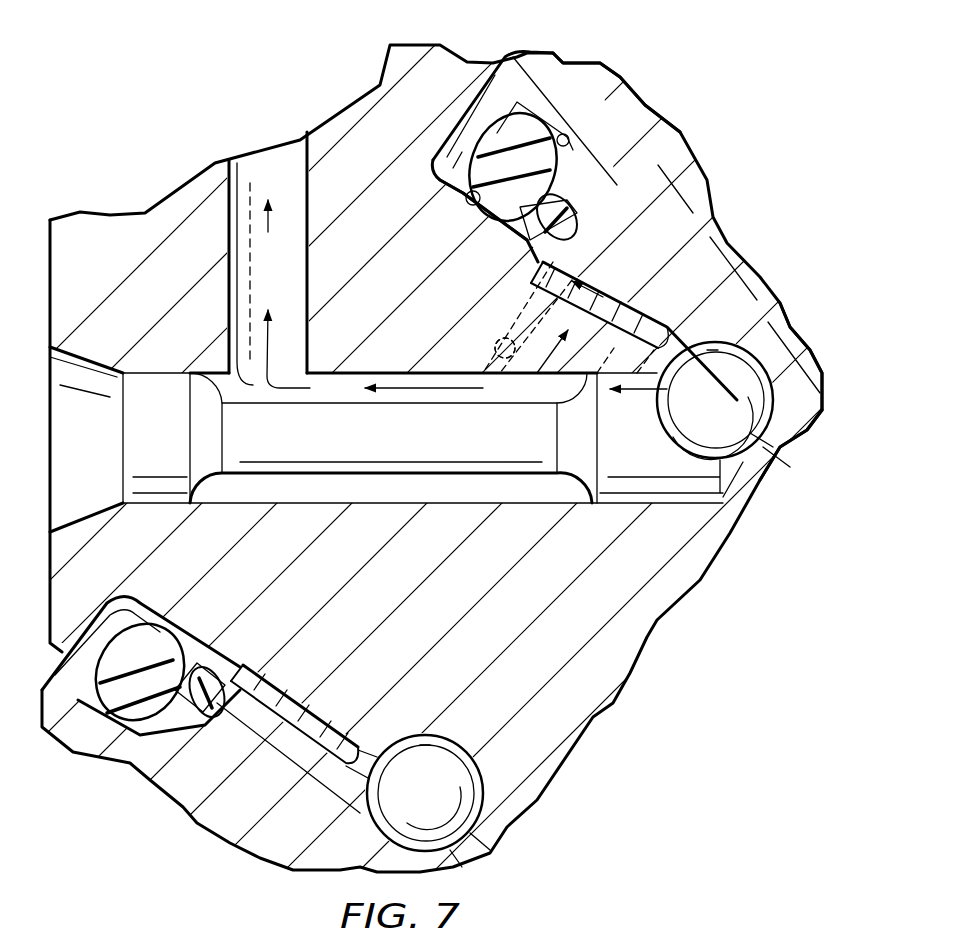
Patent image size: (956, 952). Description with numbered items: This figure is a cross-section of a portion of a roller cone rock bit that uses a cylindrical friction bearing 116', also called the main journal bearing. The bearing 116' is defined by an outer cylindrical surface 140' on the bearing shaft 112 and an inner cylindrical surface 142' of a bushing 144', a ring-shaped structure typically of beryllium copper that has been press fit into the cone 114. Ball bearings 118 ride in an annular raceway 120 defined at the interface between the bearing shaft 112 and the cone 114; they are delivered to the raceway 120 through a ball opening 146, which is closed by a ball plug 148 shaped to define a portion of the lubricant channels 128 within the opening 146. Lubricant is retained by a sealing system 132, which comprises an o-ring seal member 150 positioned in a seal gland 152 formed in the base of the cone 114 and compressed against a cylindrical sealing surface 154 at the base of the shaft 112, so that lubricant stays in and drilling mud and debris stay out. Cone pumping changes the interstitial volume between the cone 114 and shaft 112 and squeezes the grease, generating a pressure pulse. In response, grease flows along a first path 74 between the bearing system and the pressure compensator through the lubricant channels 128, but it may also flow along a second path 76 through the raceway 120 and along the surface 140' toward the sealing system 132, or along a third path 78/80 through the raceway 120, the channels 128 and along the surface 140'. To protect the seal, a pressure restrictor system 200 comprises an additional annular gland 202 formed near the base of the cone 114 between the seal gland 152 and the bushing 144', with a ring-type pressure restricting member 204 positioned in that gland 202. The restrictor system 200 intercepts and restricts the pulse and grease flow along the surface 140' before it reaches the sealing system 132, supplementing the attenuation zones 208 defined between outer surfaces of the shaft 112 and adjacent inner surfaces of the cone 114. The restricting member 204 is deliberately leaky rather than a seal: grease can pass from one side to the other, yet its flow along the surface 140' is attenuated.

The first path 74 is at (298, 390).
The second path 76 is at (732, 346).
The third path 78 is at (640, 390).
The third path 80 is at (525, 335).
The bearing shaft 112 is at (610, 657).
The cone 114 is at (757, 260).
The cylindrical friction bearing 116' is at (707, 232).
The ball bearings 118 is at (807, 423).
The annular raceway 120 is at (807, 347).
The lubricant channels 128 is at (268, 170).
The sealing system 132 is at (575, 100).
The outer cylindrical surface 140' is at (481, 235).
The inner cylindrical surface 142' is at (631, 300).
The bushing 144' is at (634, 315).
The ball opening 146 is at (500, 497).
The ball plug 148 is at (362, 462).
The o-ring seal member 150 is at (520, 130).
The seal gland 152 is at (585, 140).
The cylindrical sealing surface 154 is at (466, 203).
The pressure restrictor system 200 is at (218, 735).
The annular gland 202 is at (197, 723).
The pressure restricting member 204 is at (213, 657).
The attenuation zones 208 is at (577, 245).